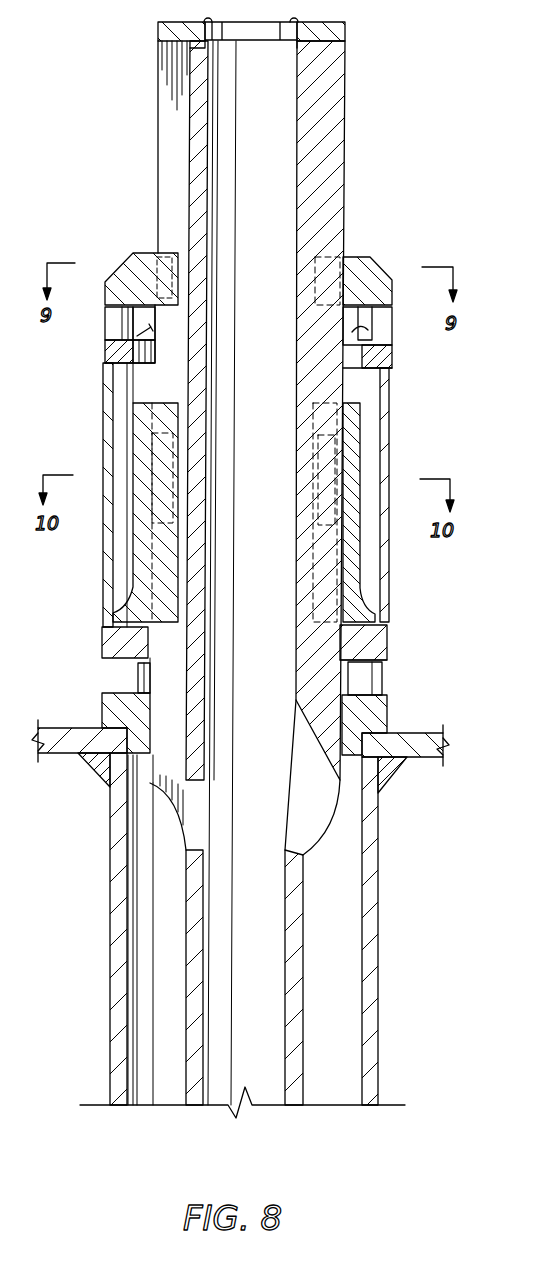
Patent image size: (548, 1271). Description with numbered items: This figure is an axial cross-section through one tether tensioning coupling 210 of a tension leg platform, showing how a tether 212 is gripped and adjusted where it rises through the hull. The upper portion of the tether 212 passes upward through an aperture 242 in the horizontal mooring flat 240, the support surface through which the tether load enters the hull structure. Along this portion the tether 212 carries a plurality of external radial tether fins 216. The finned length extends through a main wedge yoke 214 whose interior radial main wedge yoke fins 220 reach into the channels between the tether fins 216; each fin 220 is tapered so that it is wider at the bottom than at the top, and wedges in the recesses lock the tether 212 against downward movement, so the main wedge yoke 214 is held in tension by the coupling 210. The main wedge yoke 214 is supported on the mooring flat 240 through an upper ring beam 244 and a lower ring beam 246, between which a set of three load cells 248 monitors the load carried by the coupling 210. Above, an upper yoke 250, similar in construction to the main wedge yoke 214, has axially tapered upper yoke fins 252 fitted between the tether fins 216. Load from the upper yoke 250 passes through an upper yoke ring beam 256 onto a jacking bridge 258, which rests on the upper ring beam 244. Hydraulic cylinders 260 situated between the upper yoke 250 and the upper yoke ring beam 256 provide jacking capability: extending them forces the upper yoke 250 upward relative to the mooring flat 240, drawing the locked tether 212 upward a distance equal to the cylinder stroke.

The tether coupling 210 is at (375, 150).
The tether 212 is at (299, 942).
The main wedge yoke 214 is at (353, 427).
The tether fins 216 is at (345, 78).
The main wedge yoke fins 220 is at (165, 405).
The mooring flat 240 is at (70, 735).
The aperture 242 is at (362, 770).
The upper ring beam 244 is at (382, 650).
The lower ring beam 246 is at (372, 713).
The load cells 248 is at (377, 677).
The upper yoke 250 is at (369, 273).
The upper yoke fins 252 is at (168, 253).
The upper yoke ring beam 256 is at (385, 355).
The jacking bridge 258 is at (107, 577).
The hydraulic cylinders 260 is at (110, 326).